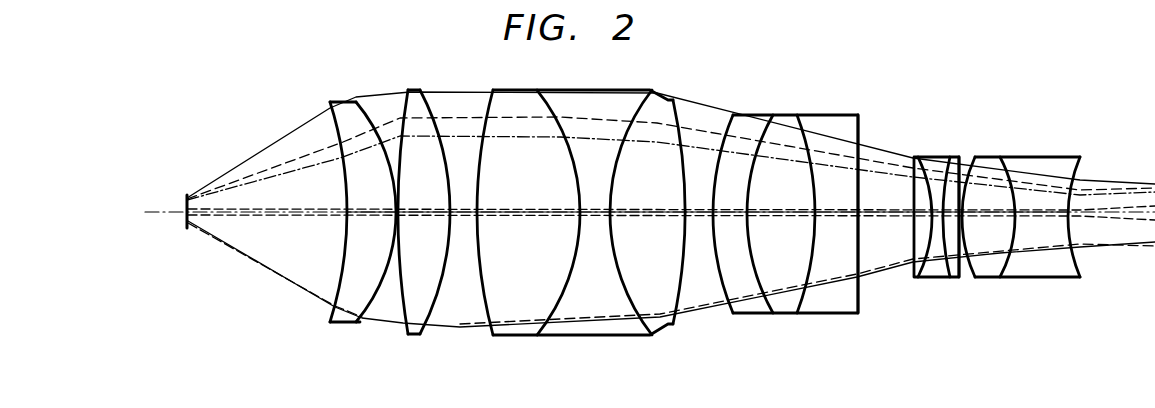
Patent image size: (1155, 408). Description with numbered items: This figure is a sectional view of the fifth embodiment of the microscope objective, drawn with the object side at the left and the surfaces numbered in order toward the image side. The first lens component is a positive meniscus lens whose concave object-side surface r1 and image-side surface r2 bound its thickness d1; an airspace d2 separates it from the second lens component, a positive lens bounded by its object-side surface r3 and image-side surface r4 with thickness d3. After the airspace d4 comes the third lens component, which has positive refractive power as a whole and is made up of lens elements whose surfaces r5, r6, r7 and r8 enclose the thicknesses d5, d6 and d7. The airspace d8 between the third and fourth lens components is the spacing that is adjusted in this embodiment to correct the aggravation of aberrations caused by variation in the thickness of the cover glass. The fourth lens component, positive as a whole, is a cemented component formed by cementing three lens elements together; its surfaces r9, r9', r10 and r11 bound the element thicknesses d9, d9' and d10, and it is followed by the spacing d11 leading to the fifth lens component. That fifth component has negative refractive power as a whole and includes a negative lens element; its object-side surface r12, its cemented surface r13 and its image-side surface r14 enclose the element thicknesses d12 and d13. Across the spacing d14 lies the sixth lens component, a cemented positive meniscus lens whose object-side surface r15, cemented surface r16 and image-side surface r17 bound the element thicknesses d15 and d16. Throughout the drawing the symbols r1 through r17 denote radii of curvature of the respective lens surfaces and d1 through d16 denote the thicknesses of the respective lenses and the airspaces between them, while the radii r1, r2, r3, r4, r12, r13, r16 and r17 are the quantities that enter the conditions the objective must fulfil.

The radius of curvature of object-side surface of first lens component r1 is at (333, 290).
The radius of curvature of image-side surface of first lens component r2 is at (372, 316).
The radius of curvature of object-side surface of second lens component r3 is at (403, 313).
The radius of curvature of image-side surface of second lens component r4 is at (433, 312).
The radius of curvature of lens surface r5 is at (487, 323).
The radius of curvature of lens surface r6 is at (566, 308).
The radius of curvature of lens surface r7 is at (636, 308).
The radius of curvature of lens surface r8 is at (683, 302).
The radius of curvature of lens surface r9 is at (725, 247).
The radius of curvature of lens surface r9' is at (764, 241).
The radius of curvature of lens surface r10 is at (803, 300).
The radius of curvature of lens surface r11 is at (870, 272).
The radius of curvature of object-side surface of fifth lens component r12 is at (917, 255).
The radius of curvature of cemented surface of fifth lens component r13 is at (930, 262).
The radius of curvature of lens surface r14 is at (968, 273).
The radius of curvature of lens surface r15 is at (975, 270).
The radius of curvature of cemented surface of sixth lens component r16 is at (1011, 273).
The radius of curvature of image-side surface of sixth lens component r17 is at (1082, 252).
The lens thickness d1 is at (368, 212).
The airspace d2 is at (392, 219).
The lens thickness d3 is at (420, 212).
The airspace d4 is at (462, 212).
The lens thickness d5 is at (512, 212).
The lens thickness d6 is at (597, 212).
The lens thickness d7 is at (653, 212).
The airspace d8 is at (698, 212).
The lens thickness d9 is at (730, 188).
The lens thickness d9' is at (781, 187).
The lens thickness d10 is at (833, 212).
The airspace d11 is at (872, 212).
The lens thickness d12 is at (925, 212).
The lens thickness d13 is at (950, 212).
The airspace d14 is at (960, 217).
The lens thickness d15 is at (988, 212).
The lens thickness d16 is at (1033, 214).